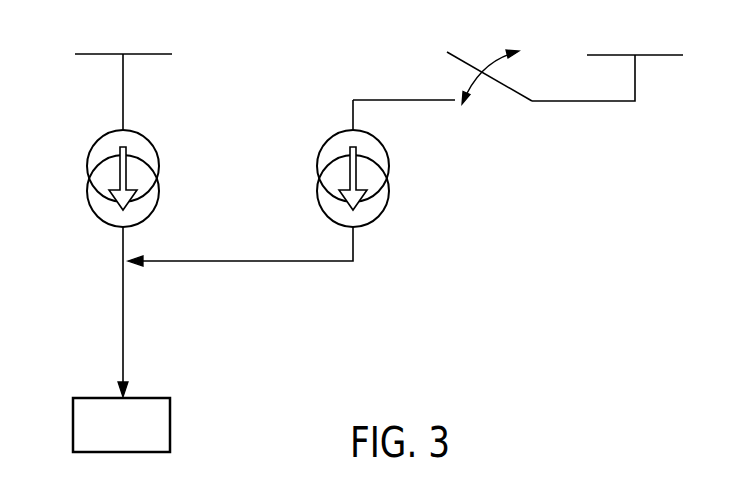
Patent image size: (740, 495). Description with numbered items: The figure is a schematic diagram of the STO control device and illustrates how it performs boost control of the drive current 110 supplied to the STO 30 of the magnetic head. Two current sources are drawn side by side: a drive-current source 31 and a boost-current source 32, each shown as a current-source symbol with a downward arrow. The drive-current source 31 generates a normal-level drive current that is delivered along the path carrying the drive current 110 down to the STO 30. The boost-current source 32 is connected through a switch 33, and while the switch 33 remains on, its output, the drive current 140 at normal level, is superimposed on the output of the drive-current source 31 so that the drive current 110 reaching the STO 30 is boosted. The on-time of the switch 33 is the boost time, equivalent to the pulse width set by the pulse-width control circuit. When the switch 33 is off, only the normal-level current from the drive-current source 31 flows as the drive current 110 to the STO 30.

The STO 30 is at (171, 425).
The drive-current source 31 is at (167, 177).
The boost-current source 32 is at (395, 178).
The switch 33 is at (497, 102).
The drive current 110 is at (122, 330).
The drive current 140 is at (280, 262).